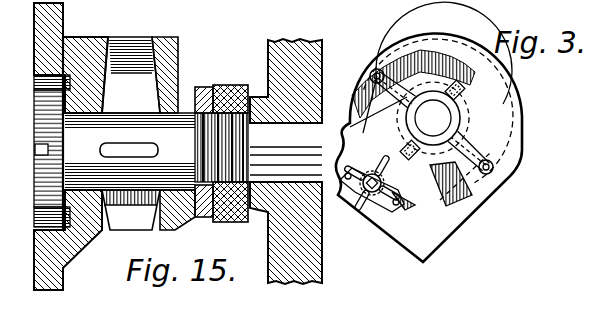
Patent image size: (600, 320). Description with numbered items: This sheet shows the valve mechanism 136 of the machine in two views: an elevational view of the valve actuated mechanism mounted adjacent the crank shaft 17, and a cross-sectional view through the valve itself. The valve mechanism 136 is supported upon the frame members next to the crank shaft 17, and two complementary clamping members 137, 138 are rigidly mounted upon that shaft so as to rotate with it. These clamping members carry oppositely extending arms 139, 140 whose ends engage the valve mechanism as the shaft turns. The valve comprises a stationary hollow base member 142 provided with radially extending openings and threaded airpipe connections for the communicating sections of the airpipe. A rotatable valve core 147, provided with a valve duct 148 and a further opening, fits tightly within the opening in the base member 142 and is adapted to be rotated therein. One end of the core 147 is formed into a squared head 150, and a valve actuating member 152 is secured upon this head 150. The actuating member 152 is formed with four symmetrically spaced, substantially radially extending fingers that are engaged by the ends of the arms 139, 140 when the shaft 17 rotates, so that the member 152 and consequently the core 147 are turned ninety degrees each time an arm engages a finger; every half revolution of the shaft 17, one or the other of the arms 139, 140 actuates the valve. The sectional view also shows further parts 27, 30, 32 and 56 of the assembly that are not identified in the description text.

In FIG. 15, the stationary hollow base member 142 is at (34, 34).
In FIG. 15, the shaft 27 is at (2, 77).
In FIG. 15, the taper bushing 30 is at (81, 133).
In FIG. 15, the spindle 32 is at (162, 150).
In FIG. 15, the rotatable valve core 147 is at (72, 127).
In FIG. 15, the clamping nut 56 is at (125, 153).
In FIG. 15, the valve duct 148 is at (158, 150).
In FIG. 15, the valve actuating member 152 is at (322, 259).
In FIG. 3, the crank shaft 17 is at (490, 100).
In FIG. 3, the clamping member 138 is at (437, 58).
In FIG. 3, the clamping member 137 is at (486, 120).
In FIG. 3, the arm 139 is at (377, 69).
In FIG. 3, the arm 140 is at (493, 165).
In FIG. 3, the valve mechanism 136 is at (362, 203).
In FIG. 3, the squared head 150 is at (363, 191).